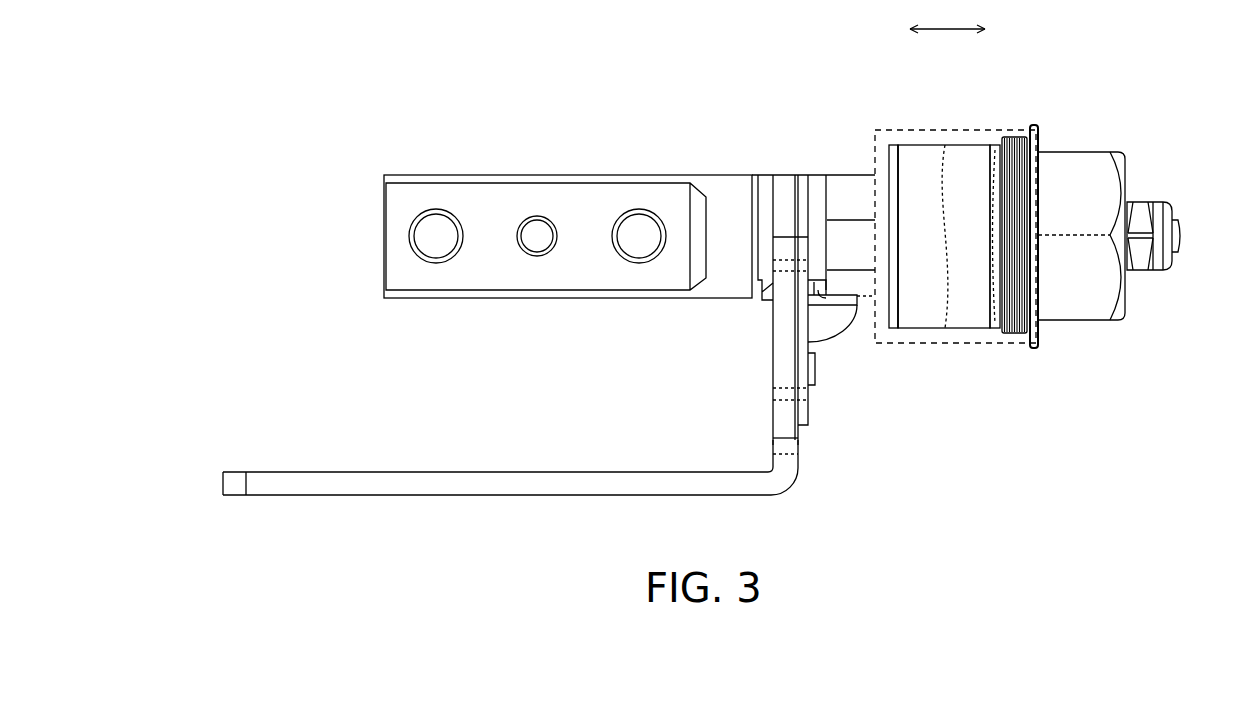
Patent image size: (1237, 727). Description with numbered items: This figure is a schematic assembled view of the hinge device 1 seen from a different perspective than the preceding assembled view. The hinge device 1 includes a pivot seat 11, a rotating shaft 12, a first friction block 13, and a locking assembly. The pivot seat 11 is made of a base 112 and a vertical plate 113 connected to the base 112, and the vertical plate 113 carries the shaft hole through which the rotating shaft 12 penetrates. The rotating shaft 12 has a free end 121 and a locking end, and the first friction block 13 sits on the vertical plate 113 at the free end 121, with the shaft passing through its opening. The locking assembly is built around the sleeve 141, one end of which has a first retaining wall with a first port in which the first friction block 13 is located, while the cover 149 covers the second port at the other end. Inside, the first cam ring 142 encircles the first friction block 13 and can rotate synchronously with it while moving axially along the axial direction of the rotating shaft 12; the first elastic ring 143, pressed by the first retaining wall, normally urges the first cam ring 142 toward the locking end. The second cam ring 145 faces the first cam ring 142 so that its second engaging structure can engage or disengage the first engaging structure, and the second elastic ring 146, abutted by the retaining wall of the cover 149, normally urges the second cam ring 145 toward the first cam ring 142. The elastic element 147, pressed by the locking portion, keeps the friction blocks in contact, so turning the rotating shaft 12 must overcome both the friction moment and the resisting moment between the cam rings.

The hinge device 1 is at (288, 76).
The pivot seat 11 is at (290, 440).
The base 112 is at (535, 471).
The vertical plate 113 is at (781, 368).
The rotating shaft 12 is at (726, 183).
The free end 121 is at (515, 178).
The first friction block 13 is at (845, 185).
The sleeve 141 is at (953, 148).
The first cam ring 142 is at (921, 328).
The first elastic ring 143 is at (895, 148).
The second cam ring 145 is at (968, 328).
The second elastic ring 146 is at (1006, 137).
The elastic element 147 is at (1012, 348).
The cover 149 is at (1080, 170).